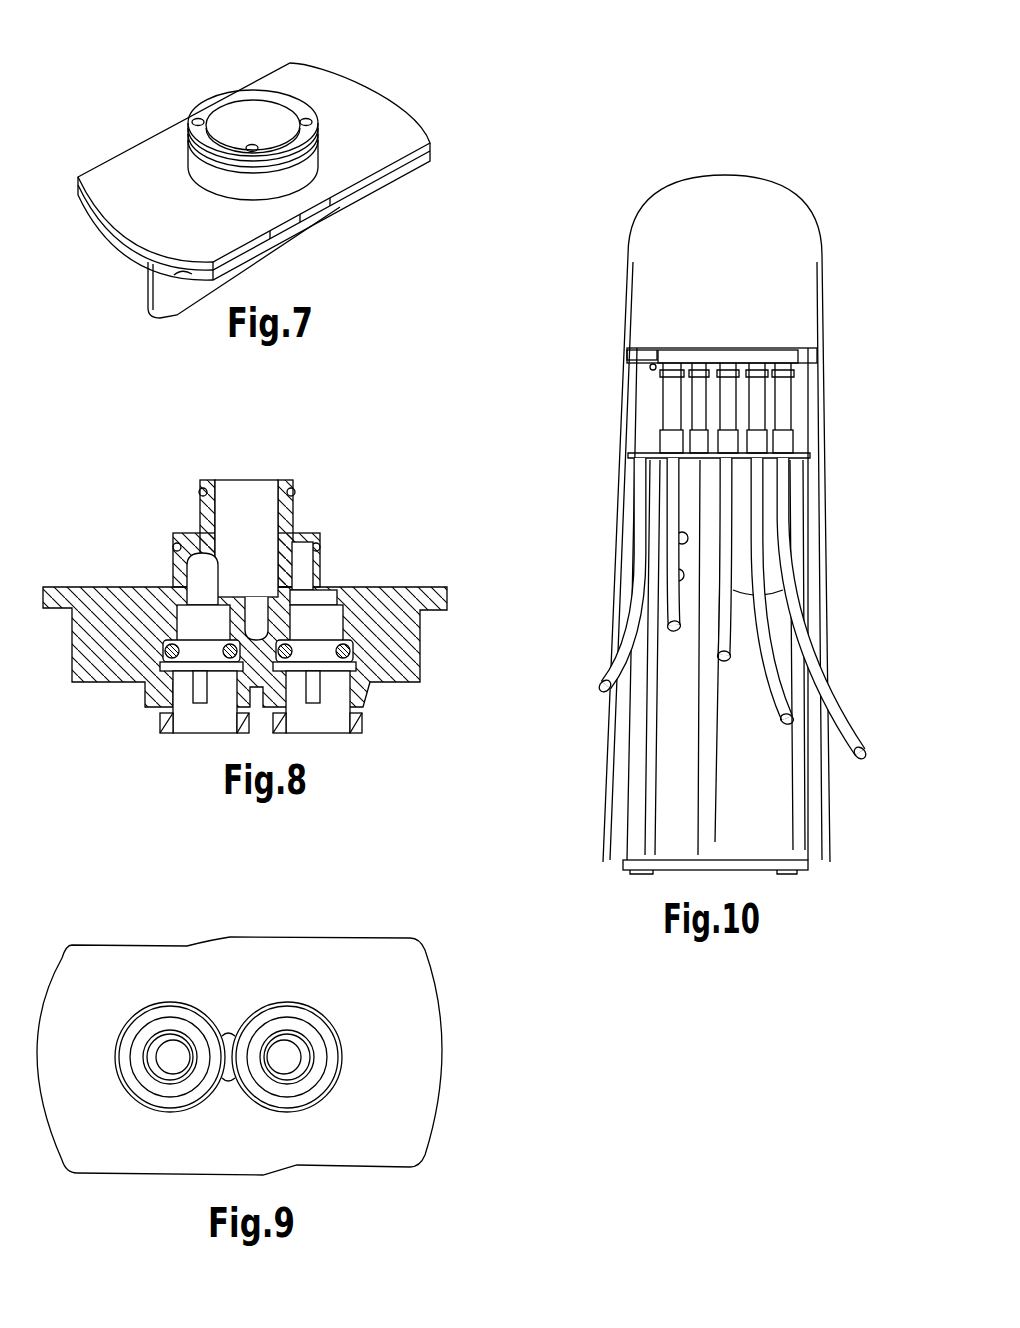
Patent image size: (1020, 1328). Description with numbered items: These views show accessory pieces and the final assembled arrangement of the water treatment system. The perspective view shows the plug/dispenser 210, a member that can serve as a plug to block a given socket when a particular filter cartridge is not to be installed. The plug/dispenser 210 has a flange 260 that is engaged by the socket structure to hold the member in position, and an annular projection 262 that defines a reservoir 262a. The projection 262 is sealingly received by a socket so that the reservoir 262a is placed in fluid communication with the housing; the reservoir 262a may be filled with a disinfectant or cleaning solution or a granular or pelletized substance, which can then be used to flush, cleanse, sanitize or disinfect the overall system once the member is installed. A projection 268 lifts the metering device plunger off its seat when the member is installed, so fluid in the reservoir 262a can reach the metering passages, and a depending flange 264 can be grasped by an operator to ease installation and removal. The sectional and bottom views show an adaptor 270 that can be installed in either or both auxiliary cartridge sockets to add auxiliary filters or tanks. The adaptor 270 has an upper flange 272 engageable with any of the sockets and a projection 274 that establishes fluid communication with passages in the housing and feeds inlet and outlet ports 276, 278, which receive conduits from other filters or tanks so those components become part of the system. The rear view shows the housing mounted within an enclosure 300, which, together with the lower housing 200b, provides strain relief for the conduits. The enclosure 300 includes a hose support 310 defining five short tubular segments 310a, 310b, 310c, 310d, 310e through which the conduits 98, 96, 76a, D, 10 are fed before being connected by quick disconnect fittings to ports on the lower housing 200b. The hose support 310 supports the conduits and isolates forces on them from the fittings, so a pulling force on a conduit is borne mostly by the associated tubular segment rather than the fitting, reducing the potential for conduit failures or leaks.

In FIG. 7, the plug/dispenser 210 is at (256, 202).
In FIG. 7, the flange 260 is at (383, 130).
In FIG. 7, the annular projection 262 is at (281, 110).
In FIG. 7, the reservoir 262a is at (240, 130).
In FIG. 7, the projection 268 is at (252, 144).
In FIG. 7, the depending flange 264 is at (172, 293).
In FIG. 8, the adaptor 270 is at (252, 607).
In FIG. 9, the adaptor 270 is at (289, 1008).
In FIG. 9, the upper flange 272 is at (407, 1055).
In FIG. 8, the projection 274 is at (319, 509).
In FIG. 8, the inlet port 276 is at (162, 722).
In FIG. 9, the inlet port 276 is at (170, 1018).
In FIG. 8, the outlet port 278 is at (356, 724).
In FIG. 9, the outlet port 278 is at (281, 1022).
In FIG. 10, the enclosure 300 is at (722, 483).
In FIG. 10, the lower housing 200b is at (773, 360).
In FIG. 10, the hose support 310 is at (722, 441).
In FIG. 10, the tubular segment 310a is at (672, 440).
In FIG. 10, the tubular segment 310b is at (695, 440).
In FIG. 10, the tubular segment 310c is at (729, 445).
In FIG. 10, the tubular segment 310d is at (752, 445).
In FIG. 10, the tubular segment 310e is at (785, 440).
In FIG. 10, the conduit 96 is at (680, 593).
In FIG. 10, the conduit 98 is at (624, 652).
In FIG. 10, the household water supply conduit 10 is at (834, 716).
In FIG. 10, the wire 76a is at (725, 634).
In FIG. 10, the conduit D is at (775, 697).